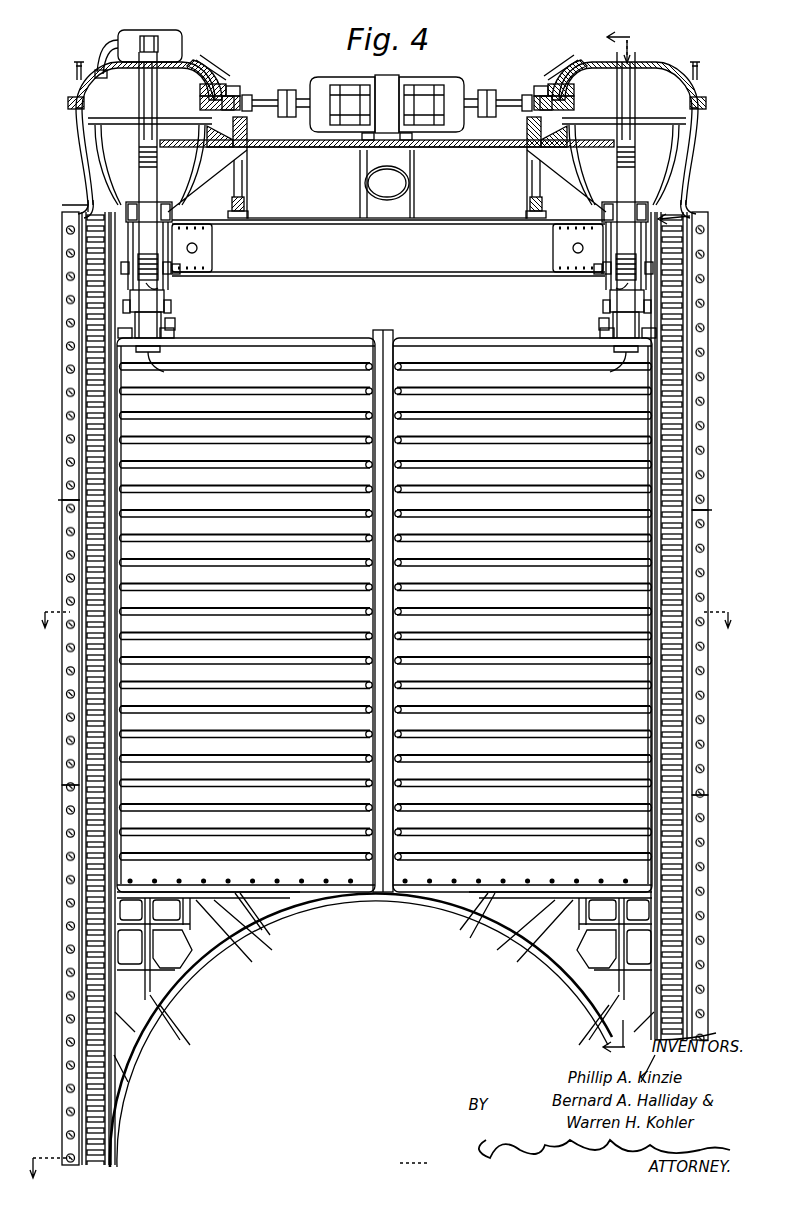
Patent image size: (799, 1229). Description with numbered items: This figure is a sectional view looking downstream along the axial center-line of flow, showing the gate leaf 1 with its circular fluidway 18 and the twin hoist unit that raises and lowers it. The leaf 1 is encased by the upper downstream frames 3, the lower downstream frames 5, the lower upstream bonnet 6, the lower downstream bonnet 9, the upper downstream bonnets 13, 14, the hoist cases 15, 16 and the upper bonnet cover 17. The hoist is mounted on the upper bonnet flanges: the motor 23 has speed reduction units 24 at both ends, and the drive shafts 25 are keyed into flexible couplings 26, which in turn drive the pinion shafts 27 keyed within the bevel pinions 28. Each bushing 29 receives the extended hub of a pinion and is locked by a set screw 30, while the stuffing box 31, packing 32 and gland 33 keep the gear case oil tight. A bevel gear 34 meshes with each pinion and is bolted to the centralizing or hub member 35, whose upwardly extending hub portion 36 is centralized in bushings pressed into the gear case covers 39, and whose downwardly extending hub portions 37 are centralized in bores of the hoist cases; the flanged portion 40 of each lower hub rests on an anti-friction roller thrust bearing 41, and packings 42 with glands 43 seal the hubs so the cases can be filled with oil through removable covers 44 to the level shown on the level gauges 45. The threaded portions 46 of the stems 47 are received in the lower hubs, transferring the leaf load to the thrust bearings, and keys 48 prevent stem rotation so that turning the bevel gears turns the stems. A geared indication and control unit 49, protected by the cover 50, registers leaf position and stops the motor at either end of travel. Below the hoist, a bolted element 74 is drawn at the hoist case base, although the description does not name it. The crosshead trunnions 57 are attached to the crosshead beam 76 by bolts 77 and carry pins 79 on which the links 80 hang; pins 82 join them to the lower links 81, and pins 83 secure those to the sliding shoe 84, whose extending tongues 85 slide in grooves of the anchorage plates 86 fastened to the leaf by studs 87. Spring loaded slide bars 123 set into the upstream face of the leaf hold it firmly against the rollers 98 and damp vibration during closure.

The leaf 1 is at (428, 350).
The upper downstream frames 3 is at (60, 938).
The lower downstream frames 5 is at (384, 610).
The lower upstream bonnet 6 is at (62, 1168).
The lower downstream bonnet 9 is at (692, 619).
The upper downstream bonnet 13 is at (60, 738).
The upper downstream bonnet 14 is at (60, 435).
The hoist case 15 is at (698, 178).
The hoist case 16 is at (76, 170).
The upper bonnet cover 17 is at (332, 192).
The circular fluidway 18 is at (318, 980).
The motor 23 is at (398, 75).
The speed reduction units 24 is at (326, 78).
The drive shafts 25 is at (304, 99).
The flexible couplings 26 is at (288, 90).
The pinion shafts 27 is at (268, 100).
The bevel pinions 28 is at (214, 84).
The bushing 29 is at (228, 96).
The set screw 30 is at (238, 86).
The stuffing box 31 is at (250, 144).
The packing 32 is at (247, 95).
The gland 33 is at (238, 110).
The bevel gear 34 is at (214, 148).
The centralizing or hub member 35 is at (200, 62).
The upwardly extending hub portion 36 is at (636, 60).
The downwardly extending hub portions 37 is at (97, 133).
The gear case covers 39 is at (98, 70).
The flanged portion 40 is at (68, 102).
The anti-friction roller thrust bearing 41 is at (88, 121).
The packings 42 is at (136, 160).
The glands 43 is at (196, 172).
The removable covers 44 is at (214, 62).
The level gauges 45 is at (74, 70).
The threaded portions 46 is at (80, 150).
The stems 47 is at (86, 196).
The keys 48 is at (106, 44).
The geared indication and control unit 49 is at (148, 36).
The cover 50 is at (174, 38).
The crosshead trunnions 57 is at (178, 275).
The bolt bracket 74 is at (228, 206).
The crosshead beam 76 is at (302, 278).
The bolts 77 is at (214, 274).
The pins 79 is at (124, 212).
The links 80 is at (128, 240).
The lower links 81 is at (160, 290).
The pins 82 is at (121, 268).
The pins 83 is at (123, 306).
The sliding shoe 84 is at (135, 324).
The extending tongues 85 is at (164, 372).
The anchorage plates 86 is at (118, 335).
The studs 87 is at (176, 324).
The rollers 98 is at (86, 858).
The spring loaded slide bars 123 is at (116, 500).